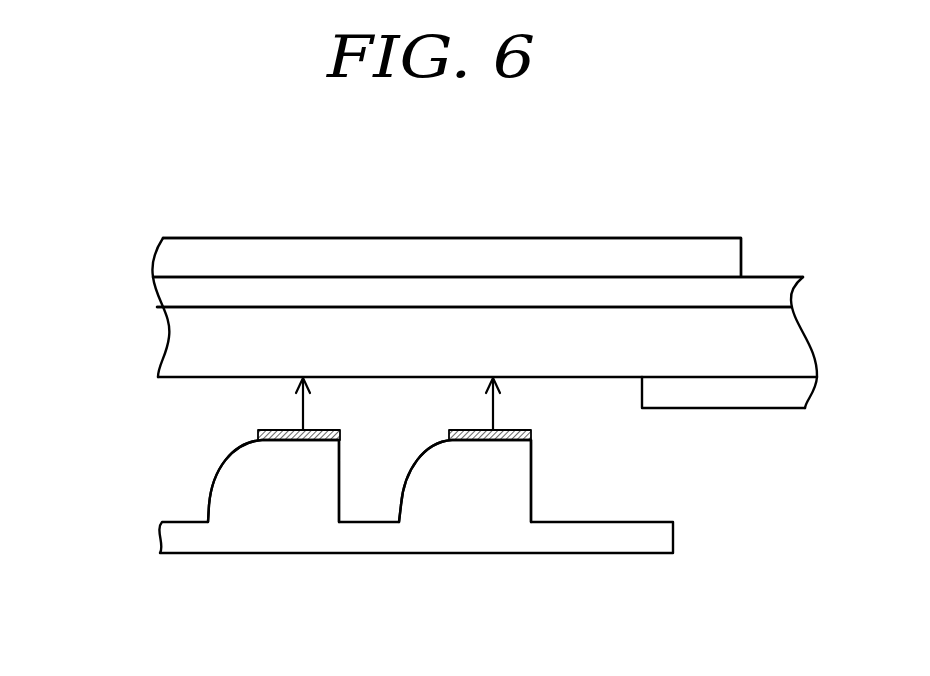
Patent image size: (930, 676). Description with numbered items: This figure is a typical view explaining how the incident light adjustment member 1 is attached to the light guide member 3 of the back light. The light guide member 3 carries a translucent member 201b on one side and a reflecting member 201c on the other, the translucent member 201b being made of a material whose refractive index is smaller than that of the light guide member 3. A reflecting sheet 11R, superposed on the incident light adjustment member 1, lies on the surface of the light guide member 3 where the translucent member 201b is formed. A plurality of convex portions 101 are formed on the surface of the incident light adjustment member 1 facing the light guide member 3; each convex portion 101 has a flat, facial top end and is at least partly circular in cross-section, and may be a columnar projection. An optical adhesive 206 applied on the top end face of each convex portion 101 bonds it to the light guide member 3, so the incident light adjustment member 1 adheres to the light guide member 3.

The incident light adjustment member 1 is at (337, 540).
The light guide member 3 is at (193, 343).
The reflecting sheet 11R is at (287, 252).
The convex portion 101 is at (213, 474).
The translucent member 201b is at (516, 293).
The reflecting member 201c is at (772, 393).
The optical adhesive 206 is at (258, 433).